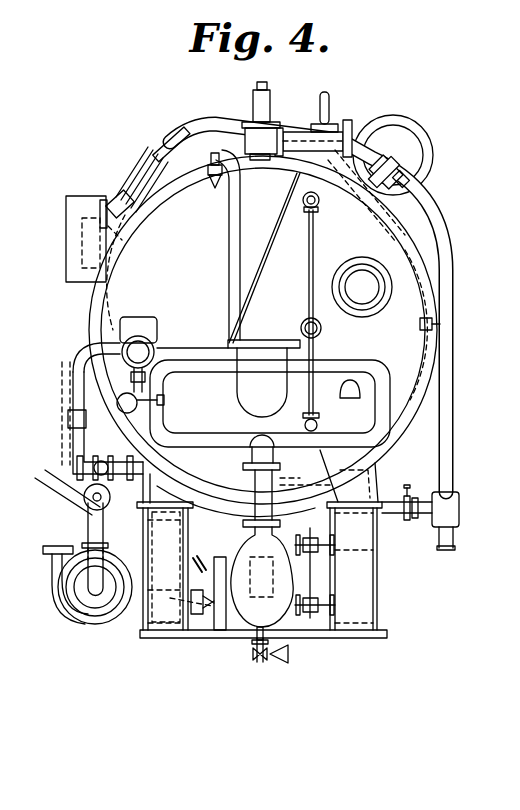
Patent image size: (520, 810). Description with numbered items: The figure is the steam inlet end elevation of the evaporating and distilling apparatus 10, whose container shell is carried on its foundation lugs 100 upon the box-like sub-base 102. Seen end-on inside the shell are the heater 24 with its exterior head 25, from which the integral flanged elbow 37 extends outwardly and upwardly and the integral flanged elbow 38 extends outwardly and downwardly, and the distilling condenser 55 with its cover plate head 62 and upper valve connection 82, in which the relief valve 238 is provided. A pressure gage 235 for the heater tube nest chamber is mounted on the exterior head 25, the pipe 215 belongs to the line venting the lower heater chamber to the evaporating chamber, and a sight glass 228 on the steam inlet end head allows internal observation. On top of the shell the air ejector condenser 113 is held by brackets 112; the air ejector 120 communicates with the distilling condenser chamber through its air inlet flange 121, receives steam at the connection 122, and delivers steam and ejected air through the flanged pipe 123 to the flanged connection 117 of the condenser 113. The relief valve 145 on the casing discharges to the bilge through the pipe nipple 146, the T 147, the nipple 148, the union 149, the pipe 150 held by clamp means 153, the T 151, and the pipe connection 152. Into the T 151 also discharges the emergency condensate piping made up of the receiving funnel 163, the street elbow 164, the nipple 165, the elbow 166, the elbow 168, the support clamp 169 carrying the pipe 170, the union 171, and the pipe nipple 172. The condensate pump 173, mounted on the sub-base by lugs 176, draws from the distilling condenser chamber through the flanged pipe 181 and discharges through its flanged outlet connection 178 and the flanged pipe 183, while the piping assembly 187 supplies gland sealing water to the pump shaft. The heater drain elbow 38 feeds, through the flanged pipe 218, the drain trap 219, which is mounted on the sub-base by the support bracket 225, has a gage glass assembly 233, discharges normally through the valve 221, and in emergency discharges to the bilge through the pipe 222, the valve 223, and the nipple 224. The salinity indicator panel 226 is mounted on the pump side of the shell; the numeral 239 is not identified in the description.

The evaporating and distilling apparatus 10 is at (320, 675).
The heater 24 is at (276, 433).
The exterior head 25 is at (187, 397).
The integral flanged elbow 37 is at (247, 388).
The integral flanged elbow 38 is at (252, 440).
The distilling condenser 55 is at (182, 255).
The cover plate head 62 is at (197, 190).
The upper valve connection 82 is at (214, 180).
The foundation lugs 100 is at (377, 470).
The sub-base 102 is at (378, 593).
The brackets 112 is at (393, 208).
The air ejector condenser 113 is at (430, 143).
The flanged connection 117 is at (347, 127).
The air ejector 120 is at (150, 165).
The air inlet flange 121 is at (115, 262).
The connection 122 is at (62, 258).
The flanged pipe 123 is at (182, 133).
The relief valve 145 is at (252, 110).
The pipe nipple 146 is at (297, 135).
The T 147 is at (352, 150).
The nipple 148 is at (392, 166).
The union 149 is at (405, 173).
The pipe 150 is at (454, 221).
The T 151 is at (460, 503).
The pipe connection 152 is at (455, 547).
The clamp means 153 is at (420, 324).
The receiving funnel 163 is at (77, 437).
The street elbow 164 is at (73, 480).
The nipple 165 is at (90, 486).
The elbow 166 is at (94, 464).
The elbow 168 is at (108, 490).
The support clamp 169 is at (147, 504).
The pipe 170 is at (220, 503).
The union 171 is at (412, 496).
The pipe nipple 172 is at (427, 514).
The condensate pump 173 is at (80, 613).
The lugs 176 is at (140, 565).
The flanged outlet connection 178 is at (52, 560).
The flanged pipe 181 is at (58, 466).
The flanged pipe 183 is at (43, 550).
The piping assembly 187 is at (103, 517).
The pipe 215 is at (308, 262).
The flanged pipe 218 is at (286, 495).
The drain trap 219 is at (247, 550).
The valve 221 is at (115, 200).
The pipe 222 is at (256, 636).
The valve 223 is at (253, 652).
The nipple 224 is at (264, 666).
The support bracket 225 is at (244, 618).
The salinity indicator panel 226 is at (67, 207).
The sight glass 228 is at (357, 266).
The gage glass assembly 233 is at (318, 578).
The pressure gage 235 is at (156, 340).
The relief valve 238 is at (235, 166).
The pipe 239 is at (212, 343).